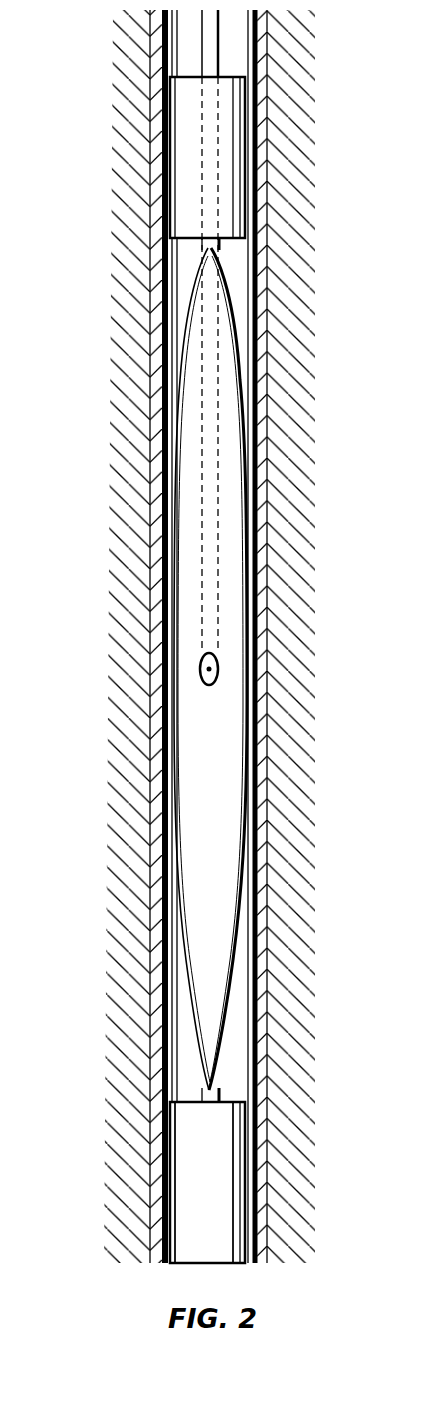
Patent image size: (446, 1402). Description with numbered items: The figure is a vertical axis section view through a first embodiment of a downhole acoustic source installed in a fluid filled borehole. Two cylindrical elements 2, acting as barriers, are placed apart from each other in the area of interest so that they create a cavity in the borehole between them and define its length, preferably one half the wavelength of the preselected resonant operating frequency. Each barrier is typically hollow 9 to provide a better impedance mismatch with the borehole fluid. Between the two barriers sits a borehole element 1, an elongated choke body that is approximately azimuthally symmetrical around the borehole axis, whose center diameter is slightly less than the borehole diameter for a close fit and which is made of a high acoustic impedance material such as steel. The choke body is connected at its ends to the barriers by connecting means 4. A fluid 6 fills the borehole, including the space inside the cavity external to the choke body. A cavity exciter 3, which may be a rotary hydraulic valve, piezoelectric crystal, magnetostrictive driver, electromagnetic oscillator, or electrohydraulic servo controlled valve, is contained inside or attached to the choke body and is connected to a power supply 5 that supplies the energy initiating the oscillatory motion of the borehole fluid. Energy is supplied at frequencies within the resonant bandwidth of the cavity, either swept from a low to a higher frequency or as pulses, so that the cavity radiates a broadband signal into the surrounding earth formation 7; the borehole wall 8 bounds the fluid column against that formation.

The borehole element 1 is at (228, 428).
The cylindrical elements 2 is at (247, 125).
The cavity exciter 3 is at (200, 681).
The connecting means 4 is at (222, 245).
The power supply 5 is at (218, 42).
The fluid 6 is at (187, 1082).
The earth formation 7 is at (130, 481).
The casing 8 is at (268, 885).
The hollow 9 is at (203, 1179).